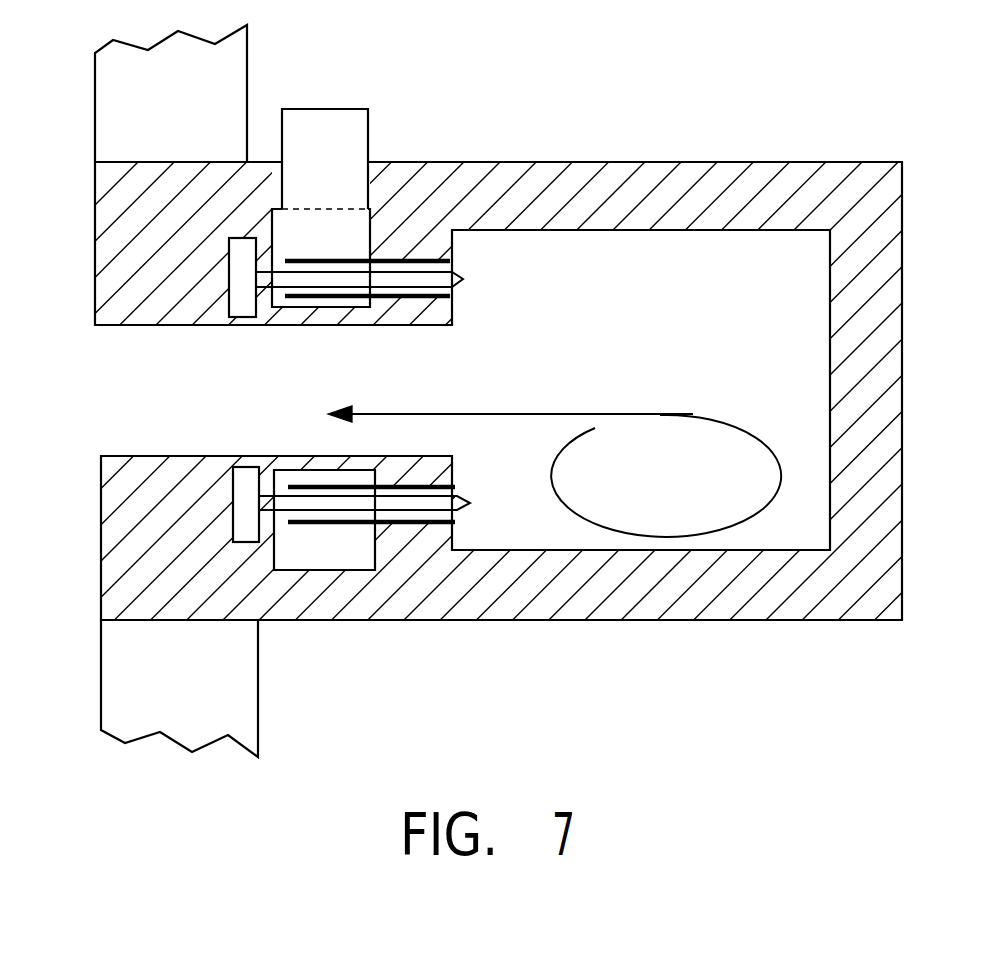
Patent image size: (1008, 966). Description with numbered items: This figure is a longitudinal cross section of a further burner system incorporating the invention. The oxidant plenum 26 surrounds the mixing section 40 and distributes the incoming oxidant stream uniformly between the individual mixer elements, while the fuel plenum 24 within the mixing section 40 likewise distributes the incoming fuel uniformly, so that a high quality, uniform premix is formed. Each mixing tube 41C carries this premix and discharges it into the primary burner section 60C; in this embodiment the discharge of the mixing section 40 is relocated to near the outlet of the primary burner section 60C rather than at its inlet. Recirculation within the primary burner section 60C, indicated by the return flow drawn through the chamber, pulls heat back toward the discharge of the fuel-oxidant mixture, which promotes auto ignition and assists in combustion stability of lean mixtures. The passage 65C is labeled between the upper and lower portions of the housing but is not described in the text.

The mixing section 40 is at (365, 209).
The oxidant plenum 26 is at (333, 232).
The mixing tube 41C is at (455, 287).
The fuel plenum 24 is at (240, 283).
The primary burner section 60C is at (710, 387).
The passage opening 65C is at (106, 404).